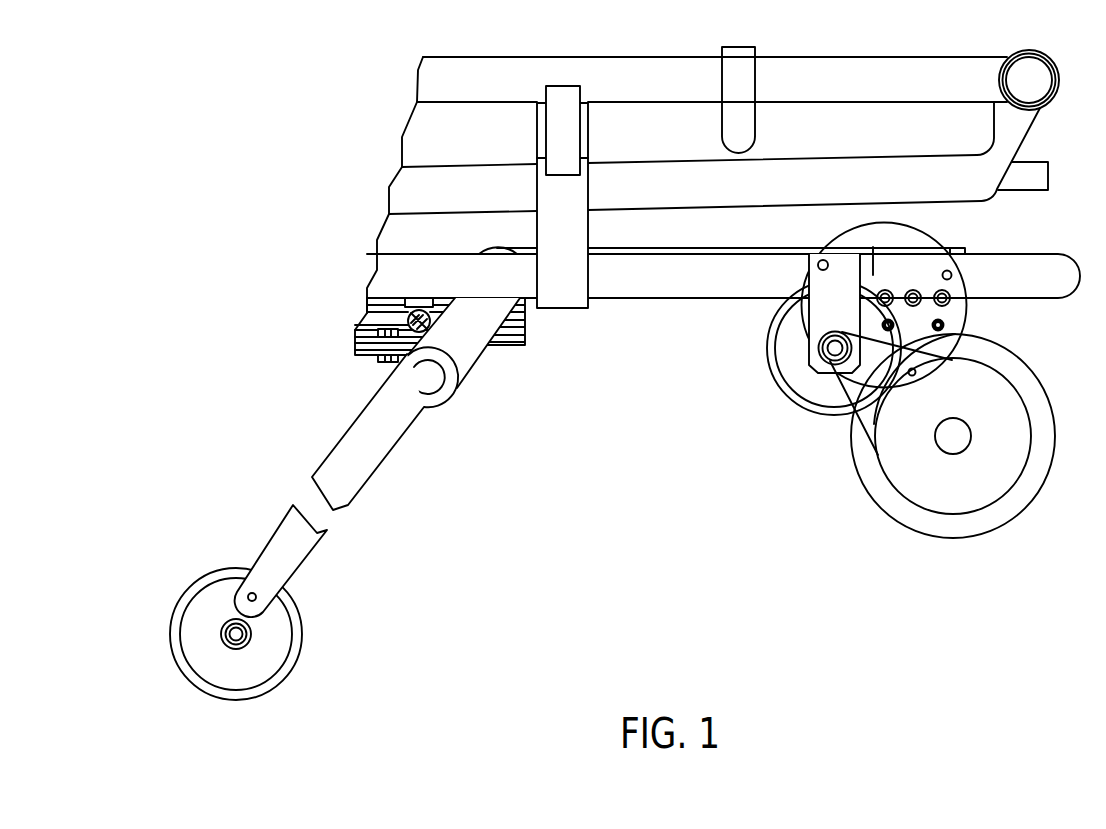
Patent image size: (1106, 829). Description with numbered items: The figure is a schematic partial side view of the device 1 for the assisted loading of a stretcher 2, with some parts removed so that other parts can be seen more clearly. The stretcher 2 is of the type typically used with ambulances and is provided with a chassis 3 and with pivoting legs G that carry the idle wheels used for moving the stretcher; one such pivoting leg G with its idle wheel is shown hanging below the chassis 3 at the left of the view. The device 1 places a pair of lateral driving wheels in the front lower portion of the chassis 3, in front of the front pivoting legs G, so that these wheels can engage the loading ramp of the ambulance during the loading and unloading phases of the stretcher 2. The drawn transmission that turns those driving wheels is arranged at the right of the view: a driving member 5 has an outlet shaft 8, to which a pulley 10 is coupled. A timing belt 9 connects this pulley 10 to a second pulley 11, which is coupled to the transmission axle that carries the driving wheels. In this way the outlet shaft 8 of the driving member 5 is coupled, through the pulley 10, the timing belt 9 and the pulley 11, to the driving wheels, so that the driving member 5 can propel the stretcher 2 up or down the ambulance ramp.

The device for the assisted loading of a stretcher 1 is at (843, 517).
The stretcher 2 is at (562, 338).
The chassis 3 is at (624, 290).
The driving member 5 is at (821, 419).
The outlet shaft 8 is at (835, 340).
The timing belt 9 is at (867, 442).
The pulley 10 is at (818, 347).
The pulley 11 is at (923, 507).
The pivoting legs G is at (323, 462).